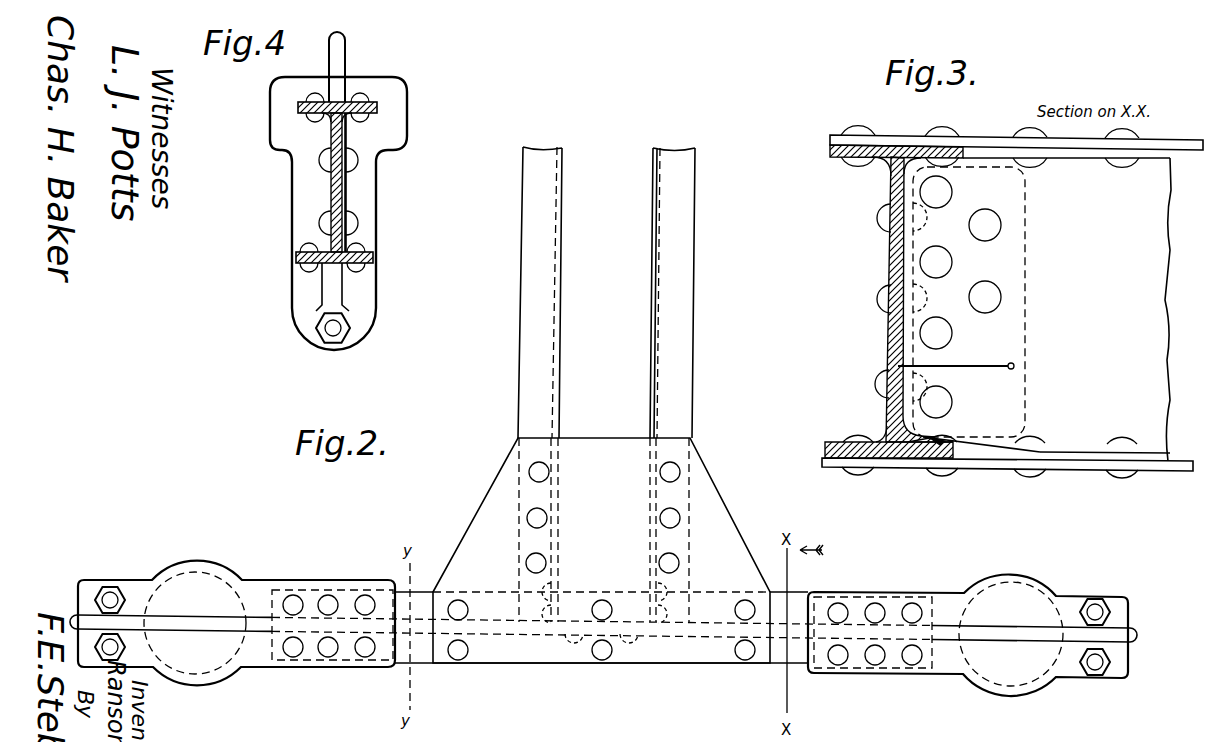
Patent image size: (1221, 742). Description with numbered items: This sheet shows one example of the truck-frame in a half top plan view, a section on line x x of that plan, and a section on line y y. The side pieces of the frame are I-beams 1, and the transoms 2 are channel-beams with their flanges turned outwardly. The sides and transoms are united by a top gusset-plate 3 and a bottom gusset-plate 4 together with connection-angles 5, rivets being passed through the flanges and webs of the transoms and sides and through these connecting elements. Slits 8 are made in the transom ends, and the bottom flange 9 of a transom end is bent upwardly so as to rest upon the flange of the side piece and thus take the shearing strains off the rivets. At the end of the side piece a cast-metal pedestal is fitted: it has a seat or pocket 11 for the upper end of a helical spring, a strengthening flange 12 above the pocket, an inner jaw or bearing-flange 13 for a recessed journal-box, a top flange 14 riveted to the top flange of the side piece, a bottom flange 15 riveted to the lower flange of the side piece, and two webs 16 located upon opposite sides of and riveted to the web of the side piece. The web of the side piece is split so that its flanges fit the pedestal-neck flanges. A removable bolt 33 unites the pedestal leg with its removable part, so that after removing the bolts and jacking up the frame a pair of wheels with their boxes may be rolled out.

In FIG. 4, the I-beam 1 is at (357, 220).
In FIG. 3, the I-beam 1 is at (888, 347).
In FIG. 3, the transom 2 is at (1168, 347).
In FIG. 2, the transom 2 is at (703, 354).
In FIG. 3, the top gusset-plate 3 is at (1016, 141).
In FIG. 2, the top gusset-plate 3 is at (601, 550).
In FIG. 3, the bottom gusset-plate 4 is at (901, 468).
In FIG. 3, the connection-angle 5 is at (1022, 264).
In FIG. 3, the slit 8 is at (958, 363).
In FIG. 3, the bottom flange of the transom end bent upwardly 9 is at (980, 449).
In FIG. 4, the seat or pocket 11 is at (390, 125).
In FIG. 2, the seat or pocket 11 is at (603, 628).
In FIG. 4, the strengthening flange 12 is at (340, 48).
In FIG. 2, the strengthening flange 12 is at (978, 628).
In FIG. 4, the inner jaw or bearing-flange 13 is at (350, 283).
In FIG. 4, the top flange 14 is at (363, 105).
In FIG. 2, the top flange 14 is at (875, 594).
In FIG. 4, the bottom flange 15 is at (323, 265).
In FIG. 4, the web 16 is at (425, 192).
In FIG. 4, the removable bolt 33 is at (333, 336).